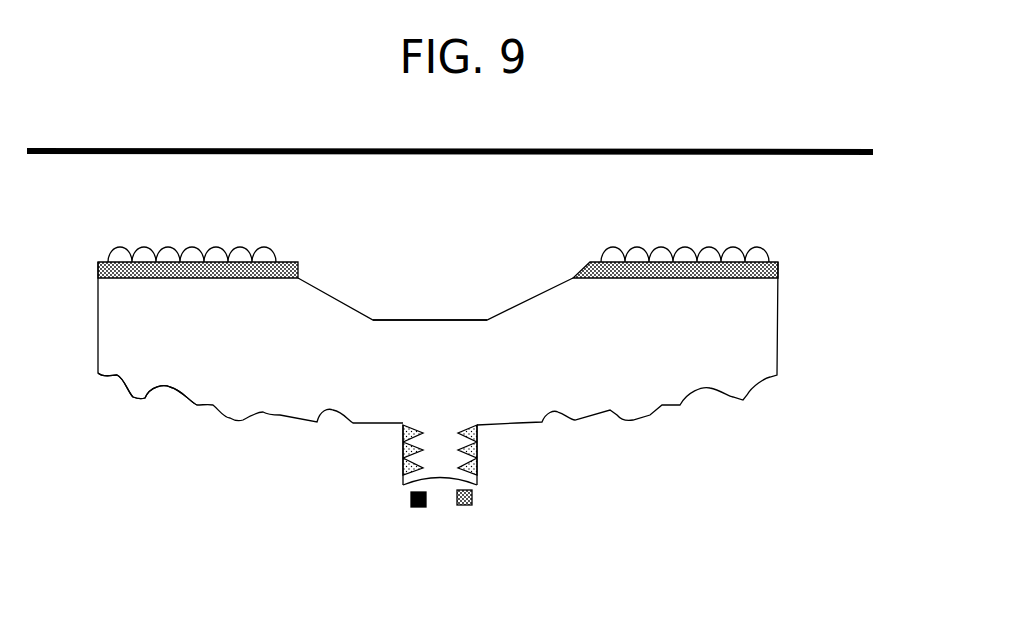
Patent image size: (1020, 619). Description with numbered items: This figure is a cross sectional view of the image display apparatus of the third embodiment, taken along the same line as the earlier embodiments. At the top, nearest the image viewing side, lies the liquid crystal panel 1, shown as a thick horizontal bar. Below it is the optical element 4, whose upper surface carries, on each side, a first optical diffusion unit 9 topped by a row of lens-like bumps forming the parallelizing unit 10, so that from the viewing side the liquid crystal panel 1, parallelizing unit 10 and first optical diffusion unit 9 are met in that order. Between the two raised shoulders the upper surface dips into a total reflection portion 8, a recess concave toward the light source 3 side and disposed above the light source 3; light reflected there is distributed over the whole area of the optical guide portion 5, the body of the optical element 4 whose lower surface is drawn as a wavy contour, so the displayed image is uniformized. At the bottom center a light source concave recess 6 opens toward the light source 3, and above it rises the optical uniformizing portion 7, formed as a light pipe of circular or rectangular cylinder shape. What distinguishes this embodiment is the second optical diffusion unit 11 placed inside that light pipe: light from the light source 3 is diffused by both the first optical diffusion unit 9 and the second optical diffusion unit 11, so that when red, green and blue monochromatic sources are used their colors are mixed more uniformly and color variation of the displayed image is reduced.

The liquid crystal panel 1 is at (460, 158).
The light source 3 is at (418, 505).
The optical element 4 is at (750, 340).
The optical guide portion 5 is at (187, 403).
The light source concave recess 6 is at (447, 478).
The optical uniformizing portion 7 is at (403, 450).
The total reflection portion 8 is at (402, 327).
The first optical diffusion unit 9 is at (767, 272).
The parallelizing unit 10 is at (212, 252).
The second optical diffusion unit 11 is at (473, 453).